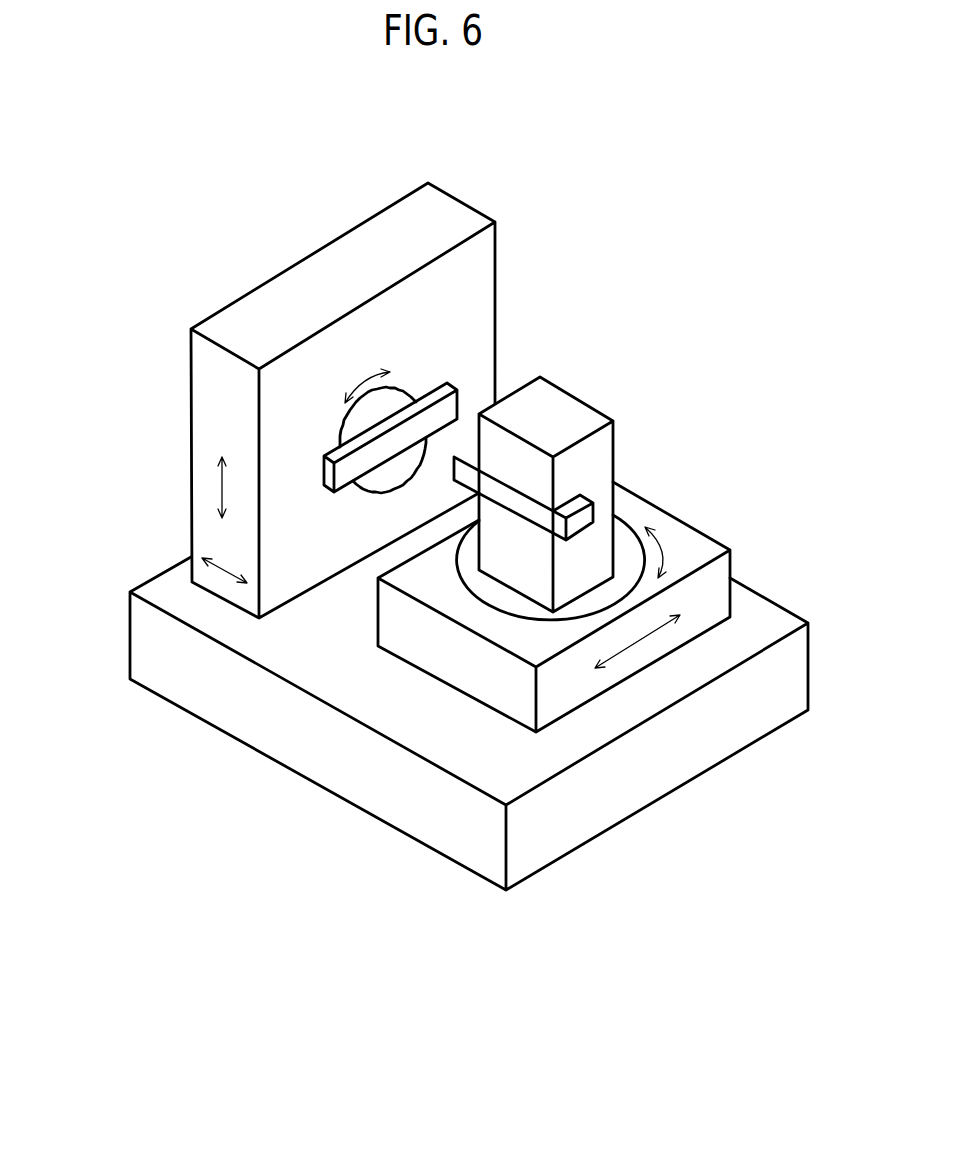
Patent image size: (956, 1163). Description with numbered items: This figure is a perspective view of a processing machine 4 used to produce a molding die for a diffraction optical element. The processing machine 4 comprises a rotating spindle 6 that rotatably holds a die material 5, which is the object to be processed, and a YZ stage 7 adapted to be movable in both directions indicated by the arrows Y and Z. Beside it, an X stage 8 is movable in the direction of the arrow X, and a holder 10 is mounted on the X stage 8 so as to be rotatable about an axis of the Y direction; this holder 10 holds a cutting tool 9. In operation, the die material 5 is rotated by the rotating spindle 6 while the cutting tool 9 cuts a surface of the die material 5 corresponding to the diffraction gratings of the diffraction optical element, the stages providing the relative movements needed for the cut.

The processing machine 4 is at (578, 247).
The die material 5 is at (453, 384).
The rotating spindle 6 is at (342, 427).
The YZ stage 7 is at (207, 518).
The X stage 8 is at (396, 629).
The cutting tool 9 is at (583, 501).
The holder 10 is at (573, 417).